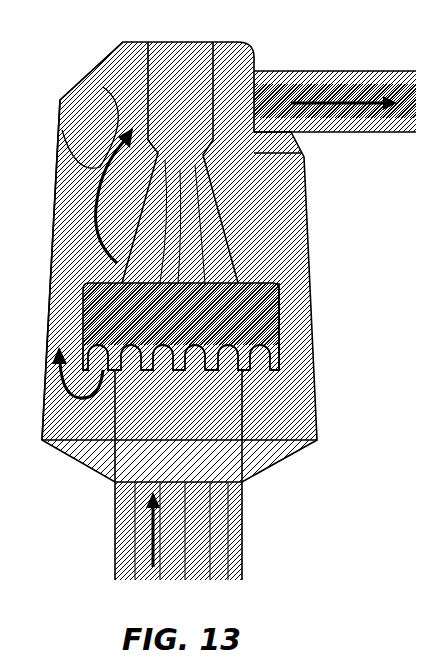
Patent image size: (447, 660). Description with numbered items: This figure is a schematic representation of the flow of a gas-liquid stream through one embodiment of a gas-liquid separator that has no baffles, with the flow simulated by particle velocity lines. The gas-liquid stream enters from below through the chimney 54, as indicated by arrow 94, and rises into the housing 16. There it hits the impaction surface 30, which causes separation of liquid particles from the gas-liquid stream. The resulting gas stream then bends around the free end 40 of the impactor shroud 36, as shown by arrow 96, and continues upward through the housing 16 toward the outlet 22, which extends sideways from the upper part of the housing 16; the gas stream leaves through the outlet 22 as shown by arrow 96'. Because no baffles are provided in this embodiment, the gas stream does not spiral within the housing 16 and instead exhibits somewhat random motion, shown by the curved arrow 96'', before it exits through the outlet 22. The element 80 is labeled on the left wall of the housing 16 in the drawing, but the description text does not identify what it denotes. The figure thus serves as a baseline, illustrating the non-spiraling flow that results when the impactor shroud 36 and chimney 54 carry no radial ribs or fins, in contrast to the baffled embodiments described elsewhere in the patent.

The housing 16 is at (98, 63).
The inlet chamber wall 80 is at (57, 185).
The arrow showing random motion of gas stream 96'' is at (76, 162).
The outlet 22 is at (314, 71).
The arrow showing gas stream exiting outlet 96' is at (344, 137).
The impaction surface 30 is at (238, 299).
The impactor shroud 36 is at (281, 330).
The free end of the impactor shroud 40 is at (262, 373).
The arrow showing gas stream bending around shroud 96 is at (75, 430).
The chimney 54 is at (244, 512).
The arrow showing entering gas-liquid stream 94 is at (150, 538).